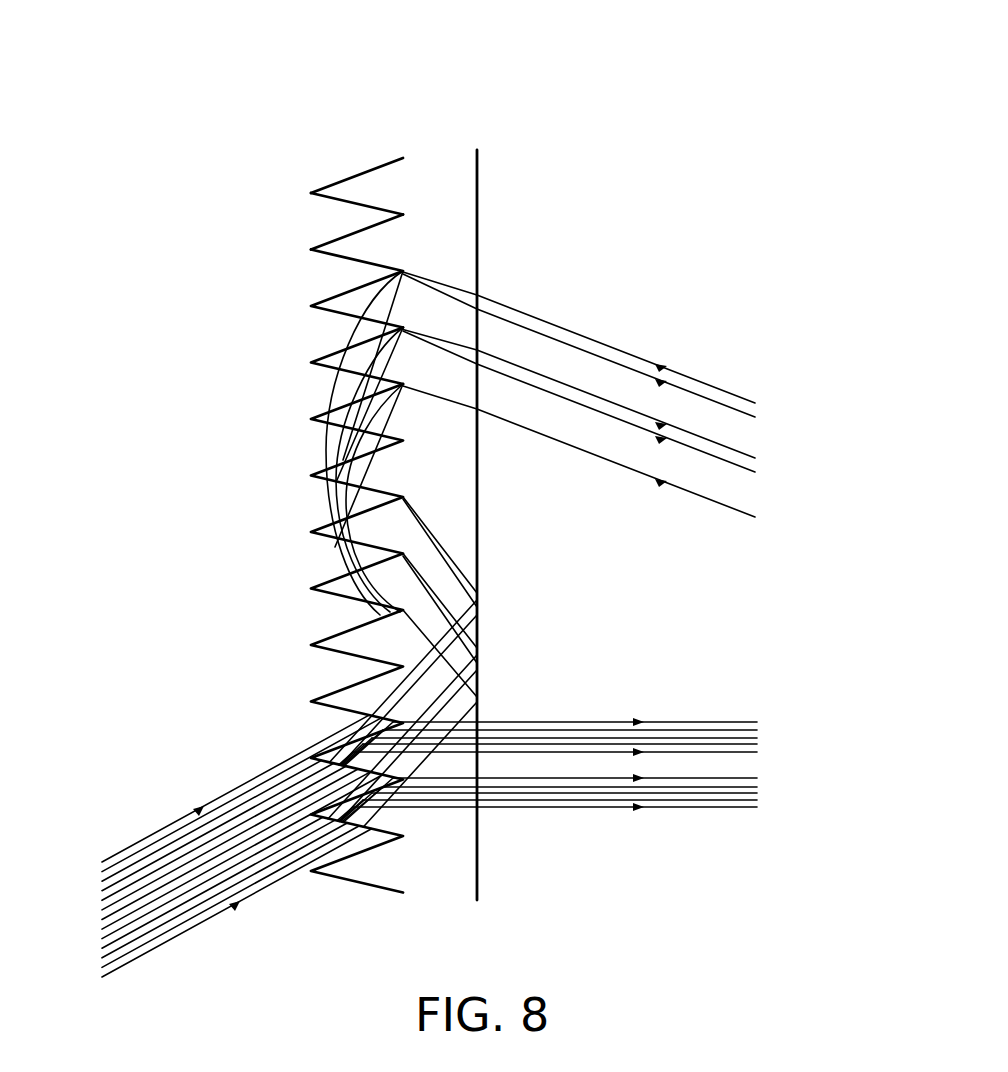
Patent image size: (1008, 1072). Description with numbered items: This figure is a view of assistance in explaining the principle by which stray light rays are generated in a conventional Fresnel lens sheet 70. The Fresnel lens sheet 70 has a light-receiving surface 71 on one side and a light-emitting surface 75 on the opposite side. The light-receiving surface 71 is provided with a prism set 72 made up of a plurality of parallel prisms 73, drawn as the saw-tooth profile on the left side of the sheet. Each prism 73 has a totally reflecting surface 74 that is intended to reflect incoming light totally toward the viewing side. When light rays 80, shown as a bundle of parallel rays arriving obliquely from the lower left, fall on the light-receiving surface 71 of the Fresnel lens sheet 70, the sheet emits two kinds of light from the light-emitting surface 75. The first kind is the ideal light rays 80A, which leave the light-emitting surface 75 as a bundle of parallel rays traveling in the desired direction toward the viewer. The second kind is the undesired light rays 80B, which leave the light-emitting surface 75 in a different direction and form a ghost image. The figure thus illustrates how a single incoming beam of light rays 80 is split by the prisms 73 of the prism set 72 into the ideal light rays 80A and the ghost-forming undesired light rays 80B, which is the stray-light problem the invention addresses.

The Fresnel lens sheet 70 is at (506, 106).
The light-receiving surface 71 is at (320, 363).
The prism set 72 is at (252, 282).
The prism 73 is at (357, 248).
The totally reflecting surface 74 is at (375, 228).
The light-emitting surface 75 is at (479, 250).
The light rays 80 is at (100, 858).
The ideal light rays 80A is at (757, 710).
The undesired light rays 80B is at (758, 388).